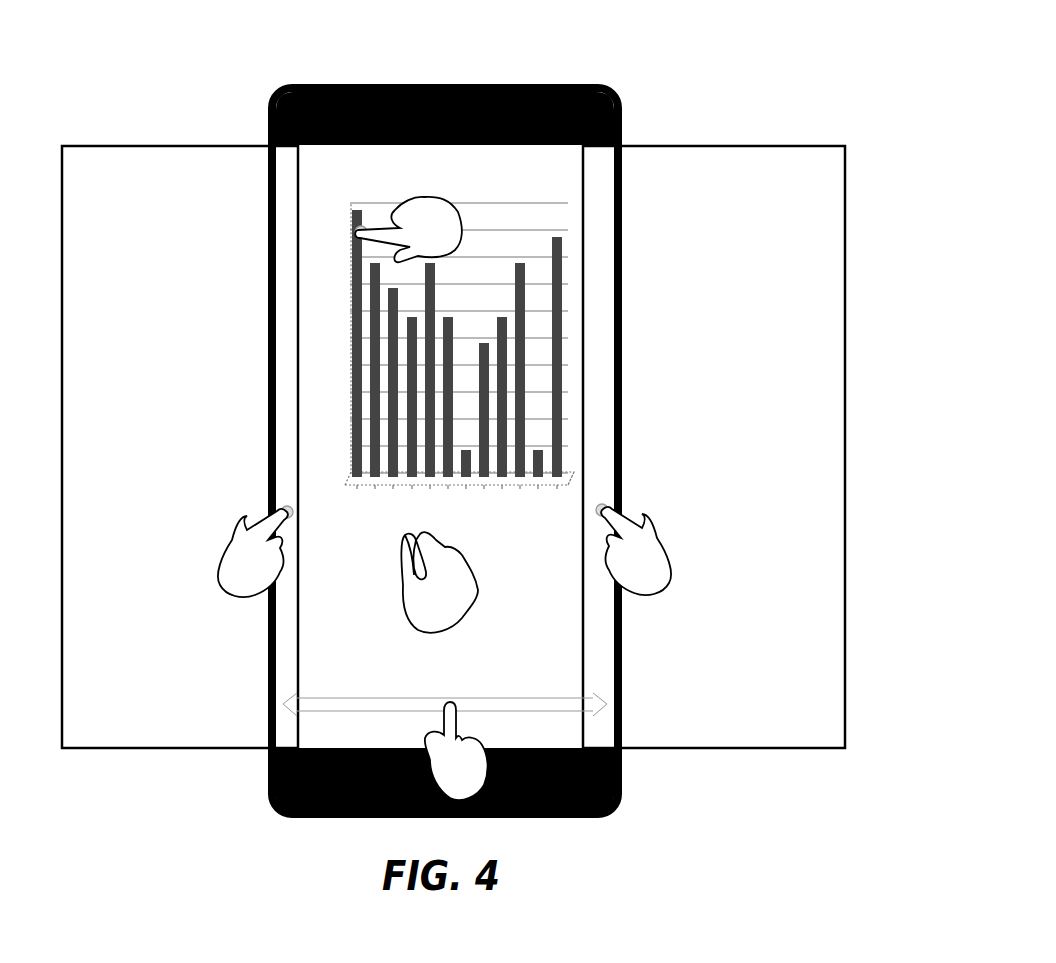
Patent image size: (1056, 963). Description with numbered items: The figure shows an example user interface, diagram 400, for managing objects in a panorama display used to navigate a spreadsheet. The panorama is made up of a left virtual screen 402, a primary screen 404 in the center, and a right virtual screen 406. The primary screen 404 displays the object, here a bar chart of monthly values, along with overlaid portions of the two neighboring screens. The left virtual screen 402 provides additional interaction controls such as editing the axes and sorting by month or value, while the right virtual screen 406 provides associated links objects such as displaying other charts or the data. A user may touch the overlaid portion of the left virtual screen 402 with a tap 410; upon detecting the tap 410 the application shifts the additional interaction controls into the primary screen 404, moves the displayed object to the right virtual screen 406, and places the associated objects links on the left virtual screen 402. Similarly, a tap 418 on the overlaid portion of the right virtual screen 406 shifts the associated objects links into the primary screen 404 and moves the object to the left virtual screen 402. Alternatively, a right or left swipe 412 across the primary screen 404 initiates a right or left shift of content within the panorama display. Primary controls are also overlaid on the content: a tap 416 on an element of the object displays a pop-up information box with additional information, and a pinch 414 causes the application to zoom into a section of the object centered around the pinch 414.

The diagram 400 is at (559, 435).
The left virtual screen 402 is at (148, 133).
The primary screen 404 is at (415, 125).
The right virtual screen 406 is at (733, 132).
The tap 410 is at (252, 505).
The swipe 412 is at (480, 735).
The pinch 414 is at (465, 620).
The tap 416 is at (450, 198).
The tap 418 is at (650, 505).